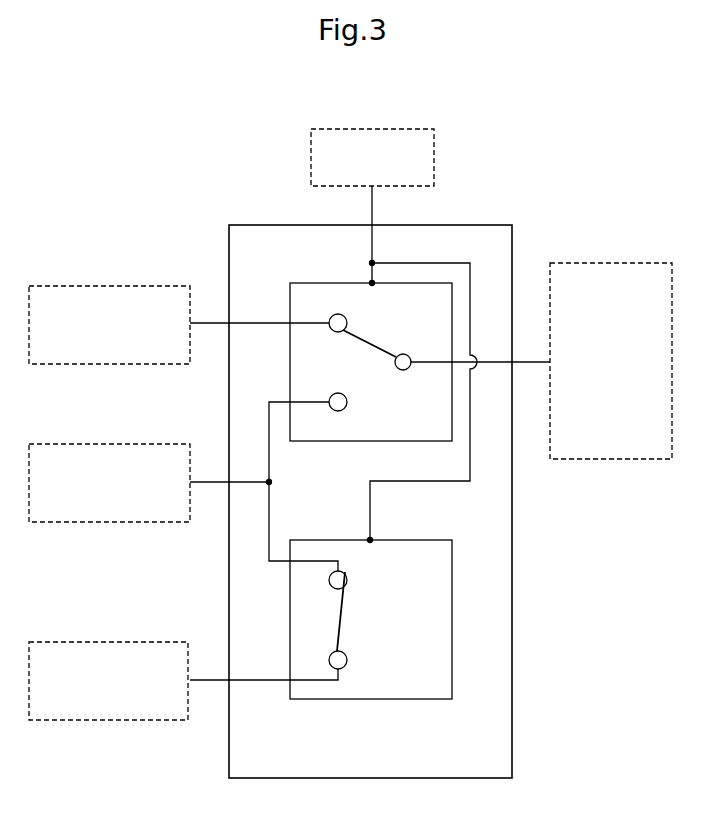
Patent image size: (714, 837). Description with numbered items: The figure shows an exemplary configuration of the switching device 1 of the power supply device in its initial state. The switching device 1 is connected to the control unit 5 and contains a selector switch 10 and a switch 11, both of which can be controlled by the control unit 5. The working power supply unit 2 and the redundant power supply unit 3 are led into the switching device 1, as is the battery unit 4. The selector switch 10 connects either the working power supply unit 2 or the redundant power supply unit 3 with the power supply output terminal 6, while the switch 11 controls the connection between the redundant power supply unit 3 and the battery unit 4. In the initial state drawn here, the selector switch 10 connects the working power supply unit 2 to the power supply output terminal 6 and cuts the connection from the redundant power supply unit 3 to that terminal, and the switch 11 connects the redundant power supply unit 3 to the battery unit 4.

The switching device 1 is at (267, 780).
The working power supply unit 2 is at (150, 286).
The redundant power supply unit 3 is at (150, 444).
The battery unit 4 is at (148, 642).
The control unit 5 is at (392, 129).
The power supply output terminal 6 is at (612, 263).
The selector switch 10 is at (330, 283).
The switch 11 is at (412, 699).